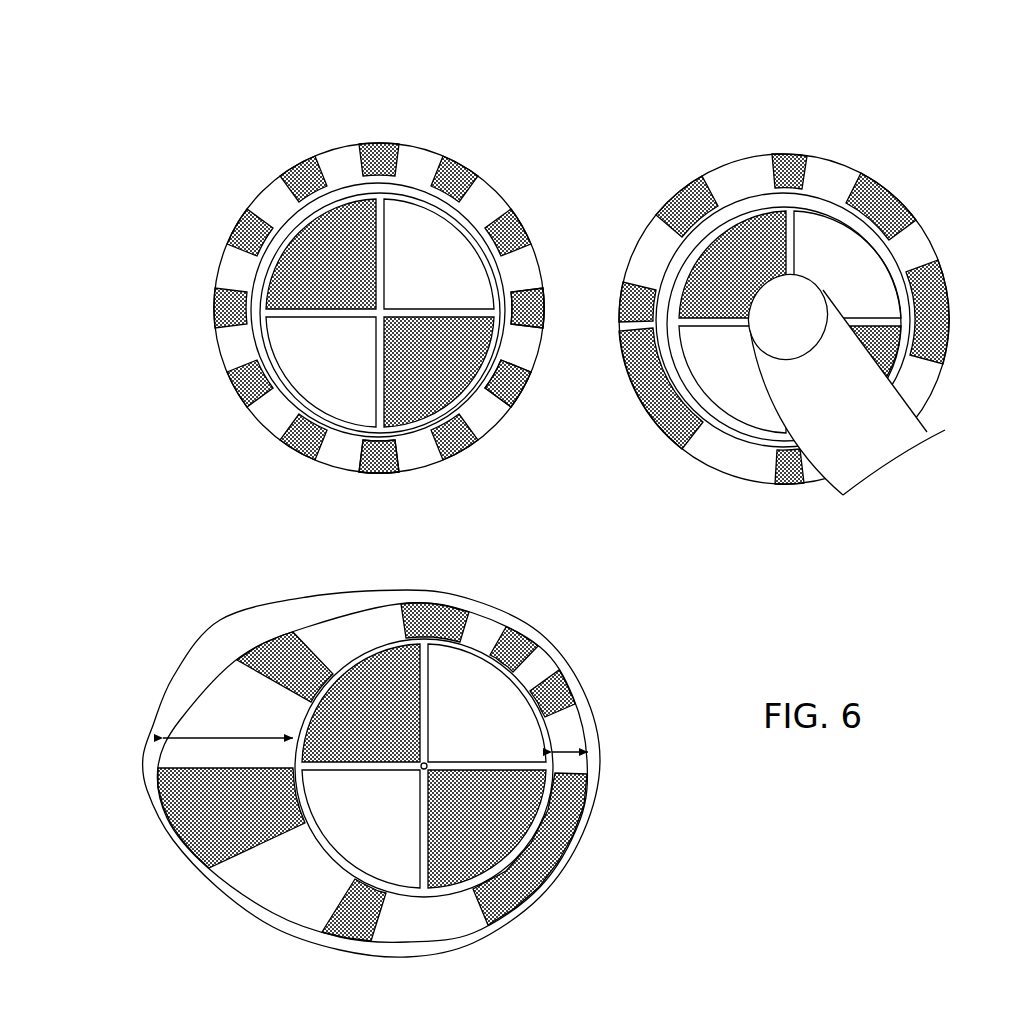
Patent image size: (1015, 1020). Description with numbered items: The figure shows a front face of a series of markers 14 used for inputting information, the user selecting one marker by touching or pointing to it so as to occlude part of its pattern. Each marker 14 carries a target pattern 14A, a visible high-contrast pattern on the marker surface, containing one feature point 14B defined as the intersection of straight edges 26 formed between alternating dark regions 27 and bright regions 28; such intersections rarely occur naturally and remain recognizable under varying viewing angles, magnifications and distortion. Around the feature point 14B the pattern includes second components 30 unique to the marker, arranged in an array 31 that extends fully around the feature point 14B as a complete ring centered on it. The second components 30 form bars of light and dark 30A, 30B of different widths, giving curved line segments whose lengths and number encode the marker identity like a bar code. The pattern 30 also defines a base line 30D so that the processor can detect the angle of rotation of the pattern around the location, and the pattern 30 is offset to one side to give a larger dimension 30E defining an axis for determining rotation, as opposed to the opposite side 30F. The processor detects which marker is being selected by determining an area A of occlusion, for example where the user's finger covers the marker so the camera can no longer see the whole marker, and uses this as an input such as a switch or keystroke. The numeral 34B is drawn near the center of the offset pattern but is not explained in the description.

The marker 14 is at (548, 222).
The target pattern 14A is at (438, 230).
The feature point 14B is at (593, 480).
The straight edges 26 is at (308, 317).
The dark regions 27 is at (303, 182).
The bright regions 28 is at (457, 282).
The second components 30 is at (535, 536).
The light bars 30A is at (533, 345).
The dark bars 30B is at (517, 390).
The base line 30D is at (193, 812).
The larger dimension 30E is at (250, 716).
The opposite side 30F is at (567, 748).
The array 31 is at (390, 463).
The dial center 34B is at (430, 758).
The area of occlusion A is at (842, 445).